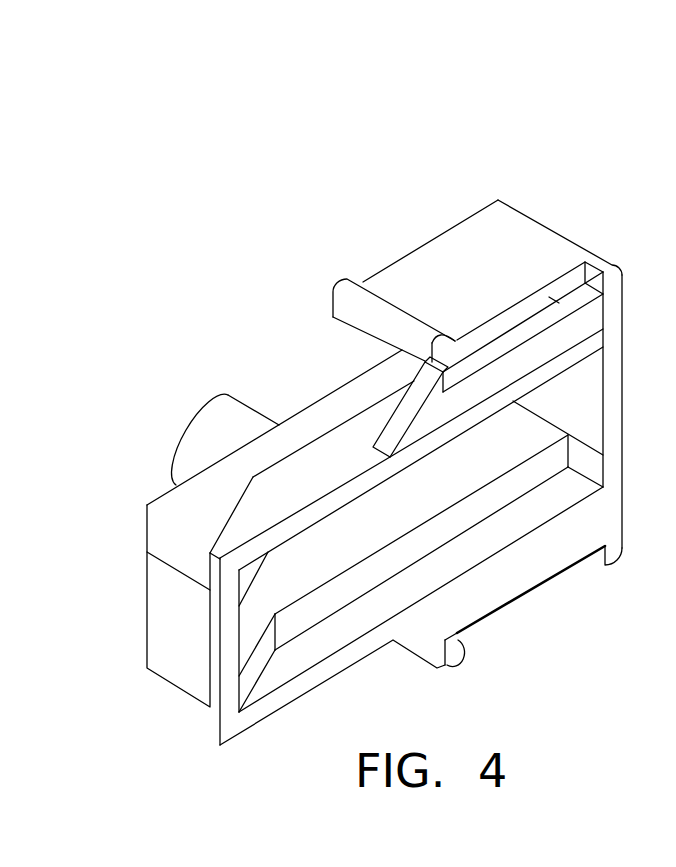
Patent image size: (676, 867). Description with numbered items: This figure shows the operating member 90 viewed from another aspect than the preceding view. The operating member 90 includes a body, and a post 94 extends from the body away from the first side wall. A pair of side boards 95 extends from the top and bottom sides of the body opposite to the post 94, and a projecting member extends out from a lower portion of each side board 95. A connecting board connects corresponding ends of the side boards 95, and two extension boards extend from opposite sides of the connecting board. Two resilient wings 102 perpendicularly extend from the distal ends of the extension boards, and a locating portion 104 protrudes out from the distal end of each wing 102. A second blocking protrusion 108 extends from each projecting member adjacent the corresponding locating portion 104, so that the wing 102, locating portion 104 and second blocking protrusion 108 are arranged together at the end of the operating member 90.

The operating member 90 is at (432, 67).
The resilient wing 102 is at (458, 252).
The locating portion 104 is at (352, 300).
The second blocking protrusion 108 is at (425, 418).
The post 94 is at (202, 418).
The side board 95 is at (187, 513).